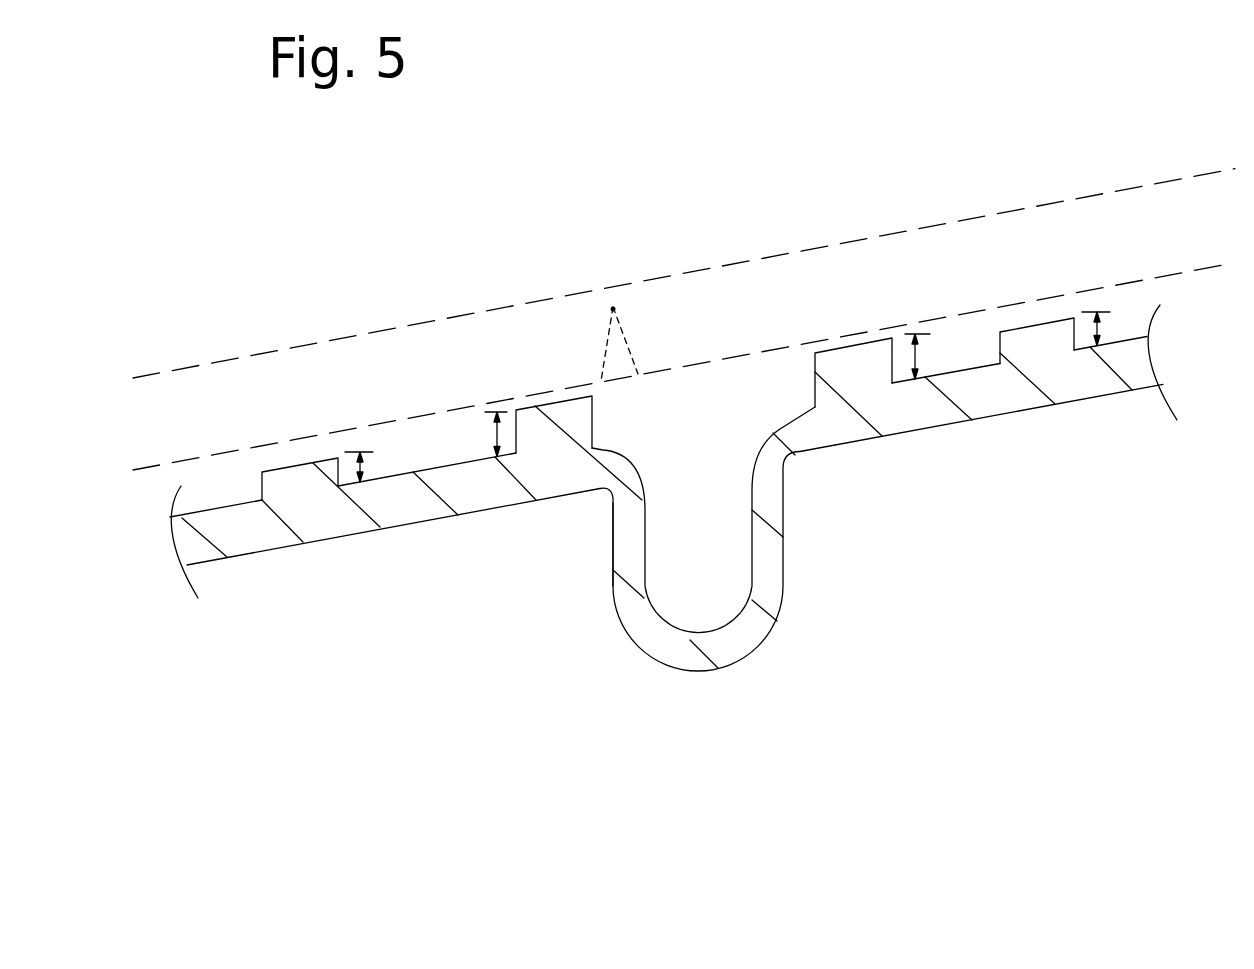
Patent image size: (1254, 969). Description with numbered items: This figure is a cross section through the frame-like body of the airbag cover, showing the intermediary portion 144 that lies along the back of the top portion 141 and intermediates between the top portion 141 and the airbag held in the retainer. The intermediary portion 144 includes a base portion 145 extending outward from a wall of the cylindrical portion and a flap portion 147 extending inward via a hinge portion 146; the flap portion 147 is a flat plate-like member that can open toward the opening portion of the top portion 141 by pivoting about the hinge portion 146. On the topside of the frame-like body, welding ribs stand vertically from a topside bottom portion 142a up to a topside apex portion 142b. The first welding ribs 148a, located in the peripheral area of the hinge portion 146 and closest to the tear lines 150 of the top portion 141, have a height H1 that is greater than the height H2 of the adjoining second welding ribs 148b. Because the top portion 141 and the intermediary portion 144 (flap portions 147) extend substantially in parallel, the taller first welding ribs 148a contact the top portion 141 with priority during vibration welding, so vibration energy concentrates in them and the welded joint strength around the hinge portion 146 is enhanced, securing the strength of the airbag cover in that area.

The top portion 141 is at (812, 243).
The topside bottom portion 142a is at (402, 476).
The topside apex portion 142b is at (280, 467).
The intermediary portion 144 is at (242, 560).
The base portion 145 is at (367, 531).
The hinge portion 146 is at (733, 662).
The flap portion 147 is at (1038, 410).
The first welding rib 148a is at (595, 413).
The second welding rib 148b is at (320, 460).
The tear line 150 is at (603, 350).
The height of first welding rib H1 is at (497, 418).
The height of second welding rib H2 is at (362, 462).